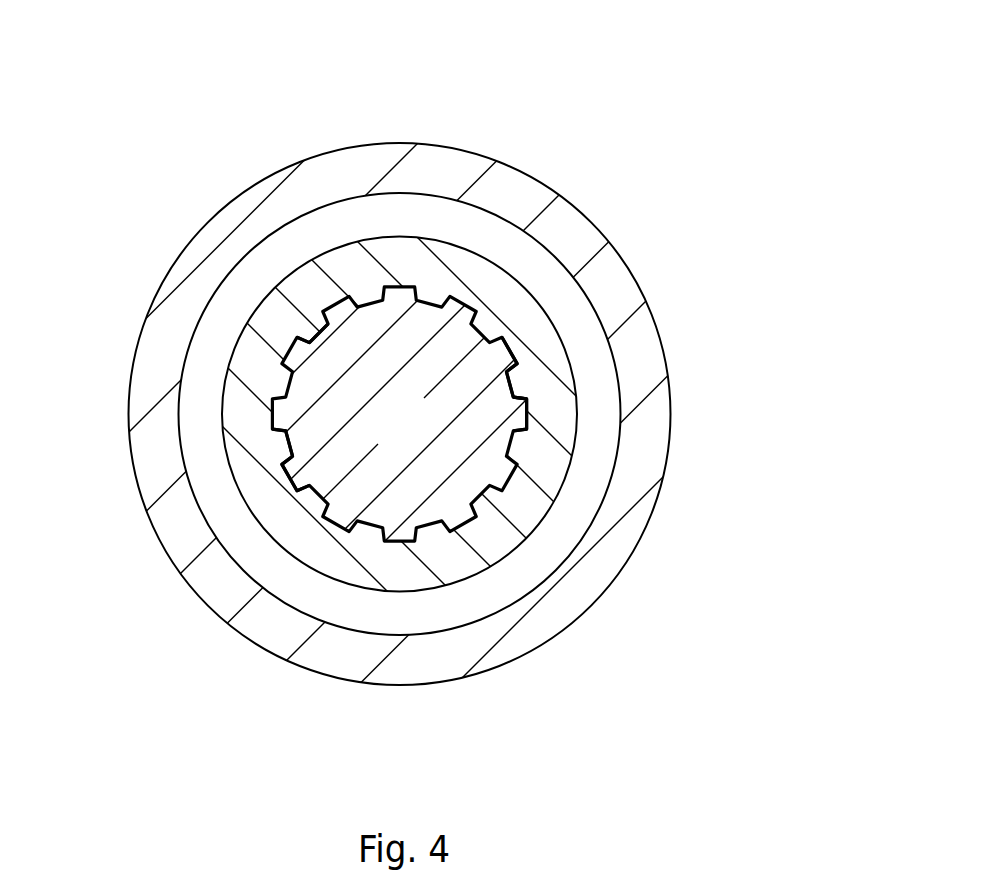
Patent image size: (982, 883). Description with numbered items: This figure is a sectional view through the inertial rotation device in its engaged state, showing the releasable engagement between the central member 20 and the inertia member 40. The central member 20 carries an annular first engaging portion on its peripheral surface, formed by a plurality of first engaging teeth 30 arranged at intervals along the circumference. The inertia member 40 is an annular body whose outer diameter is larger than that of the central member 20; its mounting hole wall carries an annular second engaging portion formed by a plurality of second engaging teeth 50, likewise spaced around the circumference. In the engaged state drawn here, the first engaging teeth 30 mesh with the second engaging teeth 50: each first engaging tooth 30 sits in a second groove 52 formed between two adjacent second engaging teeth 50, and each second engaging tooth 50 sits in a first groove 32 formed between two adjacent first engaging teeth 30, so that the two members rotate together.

The central member 20 is at (416, 430).
The first engaging teeth 30 is at (293, 483).
The first groove 32 is at (287, 437).
The inertia member 40 is at (212, 156).
The second engaging teeth 50 is at (290, 440).
The second groove 52 is at (276, 507).